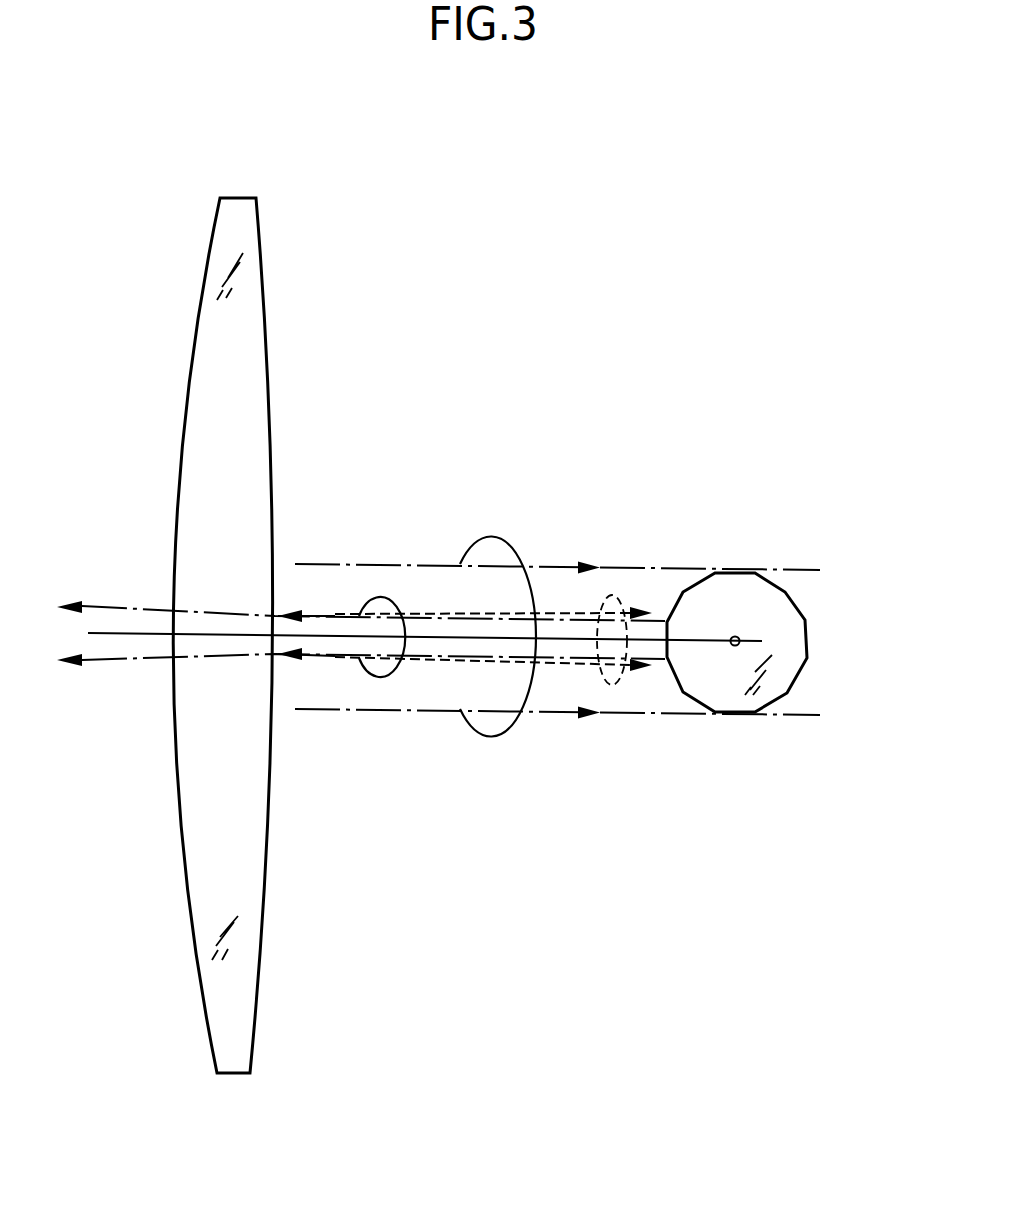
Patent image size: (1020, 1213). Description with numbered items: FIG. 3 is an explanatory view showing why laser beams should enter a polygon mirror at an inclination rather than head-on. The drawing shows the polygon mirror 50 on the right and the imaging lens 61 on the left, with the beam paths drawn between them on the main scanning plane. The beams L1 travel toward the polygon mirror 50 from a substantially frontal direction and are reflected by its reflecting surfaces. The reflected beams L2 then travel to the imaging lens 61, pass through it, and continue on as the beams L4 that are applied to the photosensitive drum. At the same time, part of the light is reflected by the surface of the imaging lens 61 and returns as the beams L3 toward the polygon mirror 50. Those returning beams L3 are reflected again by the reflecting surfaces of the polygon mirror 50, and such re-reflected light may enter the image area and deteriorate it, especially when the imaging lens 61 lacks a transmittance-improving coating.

The polygon mirror 50 is at (790, 648).
The imaging lens 61 is at (238, 988).
The beams to be entered the polygon mirror L1 is at (490, 537).
The reflected beams L2 is at (378, 597).
The laser beams reflected by the imaging lens L3 is at (612, 685).
The beams applied to the photosensitive drum L4 is at (106, 722).